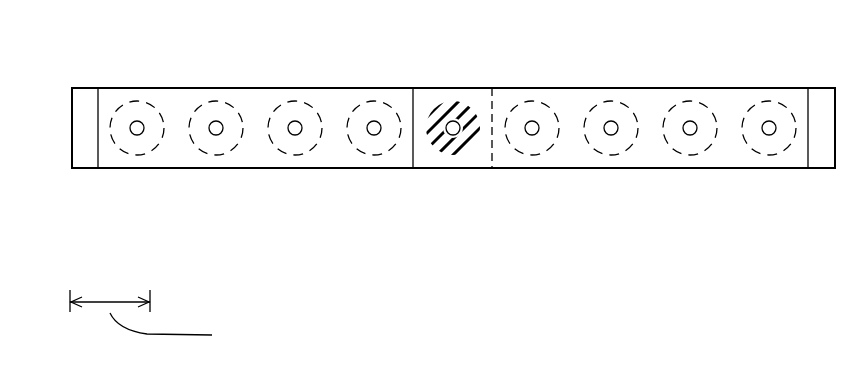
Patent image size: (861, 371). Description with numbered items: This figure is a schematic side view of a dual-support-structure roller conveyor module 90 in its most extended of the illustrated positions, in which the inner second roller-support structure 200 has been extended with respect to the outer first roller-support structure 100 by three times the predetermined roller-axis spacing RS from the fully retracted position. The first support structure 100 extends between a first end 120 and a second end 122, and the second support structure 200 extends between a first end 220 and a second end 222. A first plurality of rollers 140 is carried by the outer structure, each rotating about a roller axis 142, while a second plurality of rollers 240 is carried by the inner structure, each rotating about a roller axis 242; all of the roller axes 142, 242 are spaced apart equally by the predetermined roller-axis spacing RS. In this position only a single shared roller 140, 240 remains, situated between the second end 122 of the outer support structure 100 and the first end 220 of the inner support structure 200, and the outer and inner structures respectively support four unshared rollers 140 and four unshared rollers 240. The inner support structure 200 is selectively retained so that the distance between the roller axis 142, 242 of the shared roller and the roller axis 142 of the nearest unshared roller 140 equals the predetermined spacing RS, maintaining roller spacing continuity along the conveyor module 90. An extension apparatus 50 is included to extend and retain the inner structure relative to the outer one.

The extension apparatus 50 is at (84, 158).
The roller conveyor module 90 is at (706, 56).
The first roller-support structure 100 is at (792, 100).
The first end of the first support structure 120 is at (835, 140).
The second end of the first support structure 122 is at (409, 87).
The first plurality of rollers 140 is at (753, 112).
The roller axis 142 is at (770, 135).
The second roller-support structure 200 is at (386, 95).
The first end of the second support structure 220 is at (491, 88).
The second end of the second support structure 222 is at (77, 122).
The second plurality of rollers 240 is at (360, 118).
The roller axis 242 is at (373, 134).